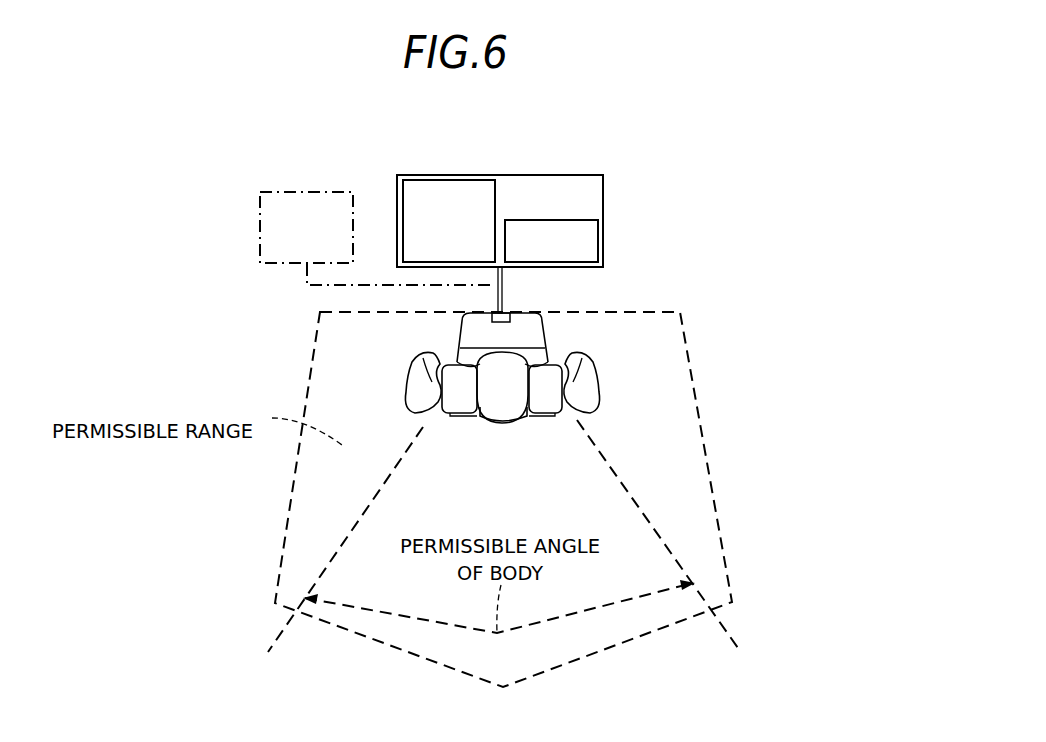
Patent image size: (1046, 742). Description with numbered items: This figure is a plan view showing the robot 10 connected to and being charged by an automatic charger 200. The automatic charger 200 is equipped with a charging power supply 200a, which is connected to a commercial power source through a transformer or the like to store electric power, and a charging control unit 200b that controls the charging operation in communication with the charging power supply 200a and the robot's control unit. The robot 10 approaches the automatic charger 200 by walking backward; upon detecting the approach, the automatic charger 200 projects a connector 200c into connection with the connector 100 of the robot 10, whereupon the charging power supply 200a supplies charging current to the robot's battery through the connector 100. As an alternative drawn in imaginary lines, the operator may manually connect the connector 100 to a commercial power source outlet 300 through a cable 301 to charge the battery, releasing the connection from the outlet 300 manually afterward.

The robot 10 is at (546, 330).
The connector 100 is at (492, 313).
The automatic charger 200 is at (561, 172).
The charging power supply 200a is at (449, 221).
The charging control unit 200b is at (551, 241).
The connector 200c is at (503, 287).
The commercial power source outlet 300 is at (310, 188).
The cable 301 is at (305, 268).